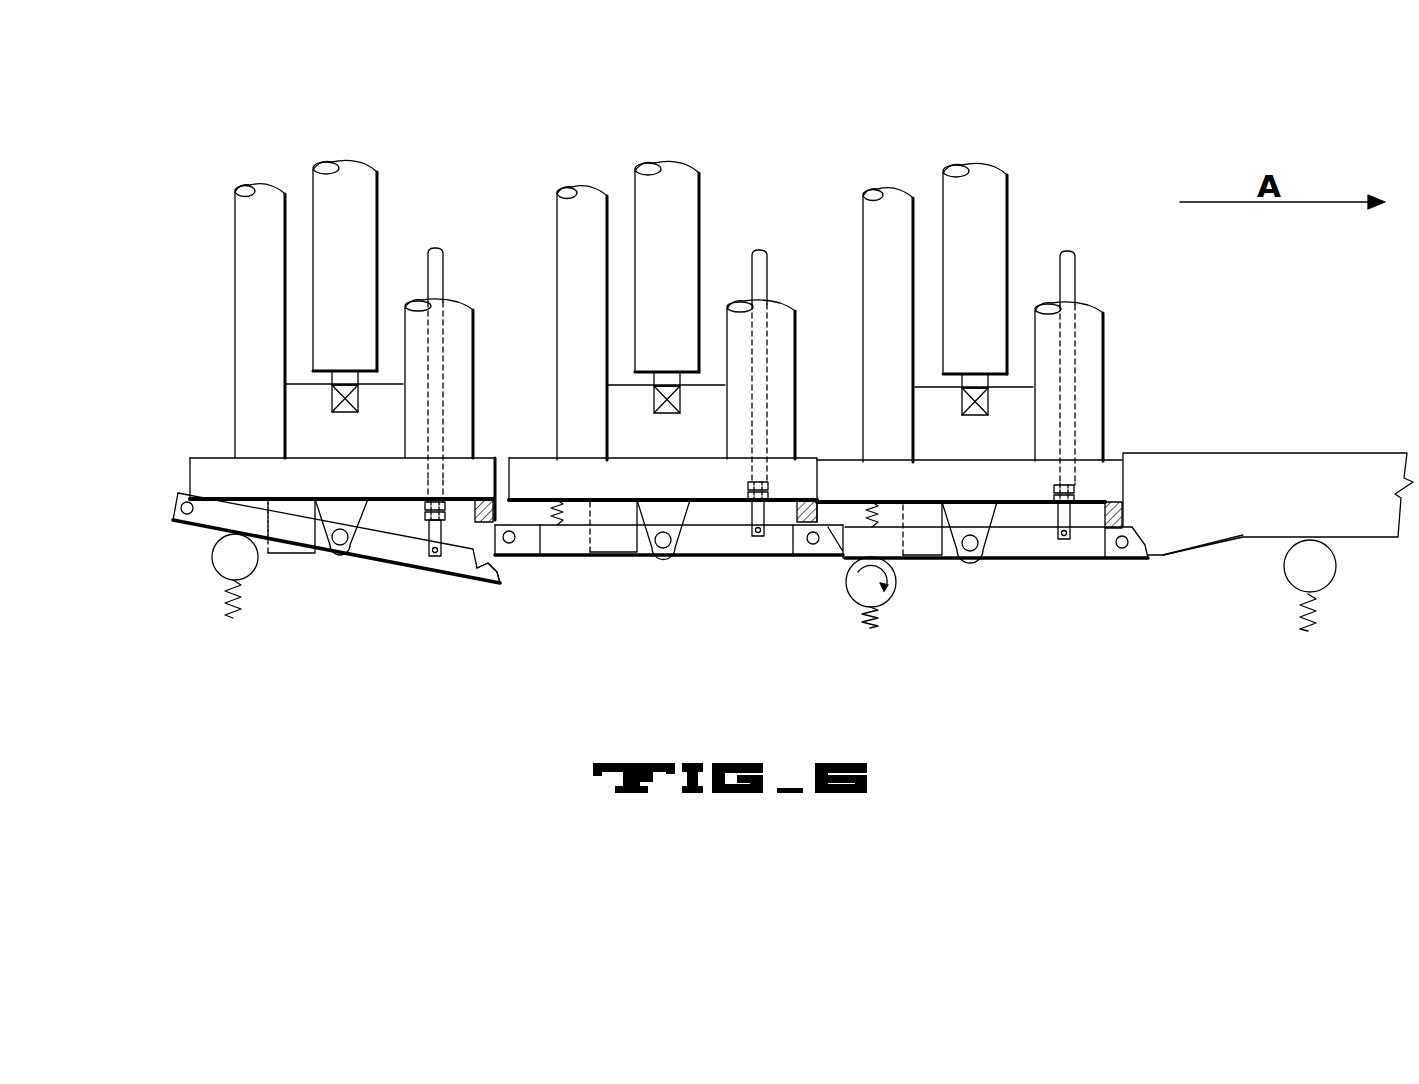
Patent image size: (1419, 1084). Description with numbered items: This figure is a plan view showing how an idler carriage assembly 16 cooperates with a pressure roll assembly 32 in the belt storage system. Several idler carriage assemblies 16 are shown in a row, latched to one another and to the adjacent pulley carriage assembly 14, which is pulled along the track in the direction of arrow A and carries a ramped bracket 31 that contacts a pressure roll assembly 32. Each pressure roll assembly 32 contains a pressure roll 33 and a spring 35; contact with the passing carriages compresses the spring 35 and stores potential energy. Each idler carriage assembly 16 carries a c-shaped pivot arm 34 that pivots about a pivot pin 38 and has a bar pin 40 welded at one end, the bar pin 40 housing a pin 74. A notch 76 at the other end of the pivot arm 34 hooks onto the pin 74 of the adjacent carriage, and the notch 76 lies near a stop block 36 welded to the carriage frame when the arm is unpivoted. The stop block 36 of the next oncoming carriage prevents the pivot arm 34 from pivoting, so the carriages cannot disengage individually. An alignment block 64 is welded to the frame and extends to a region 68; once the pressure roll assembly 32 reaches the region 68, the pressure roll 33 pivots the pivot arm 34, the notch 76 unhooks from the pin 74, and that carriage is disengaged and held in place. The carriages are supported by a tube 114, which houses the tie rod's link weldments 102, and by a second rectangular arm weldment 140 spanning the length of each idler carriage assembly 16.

The pulley carriage assembly 14 is at (1267, 453).
The idler carriage assembly 16 is at (378, 193).
The ramped bracket 31 is at (1217, 537).
The pressure roll assembly 32 is at (188, 624).
The pressure roll 33 is at (212, 567).
The pivot arm 34 is at (445, 580).
The spring 35 is at (245, 608).
The stop block 36 is at (483, 498).
The pivot pin 38 is at (350, 552).
The bar pin 40 is at (188, 524).
The alignment block 64 is at (290, 555).
The region 68 is at (263, 500).
The pin 74 is at (514, 545).
The notch 76 is at (500, 583).
The link weldment 102 is at (445, 267).
The tube 114 is at (473, 318).
The arm weldment 140 is at (235, 210).